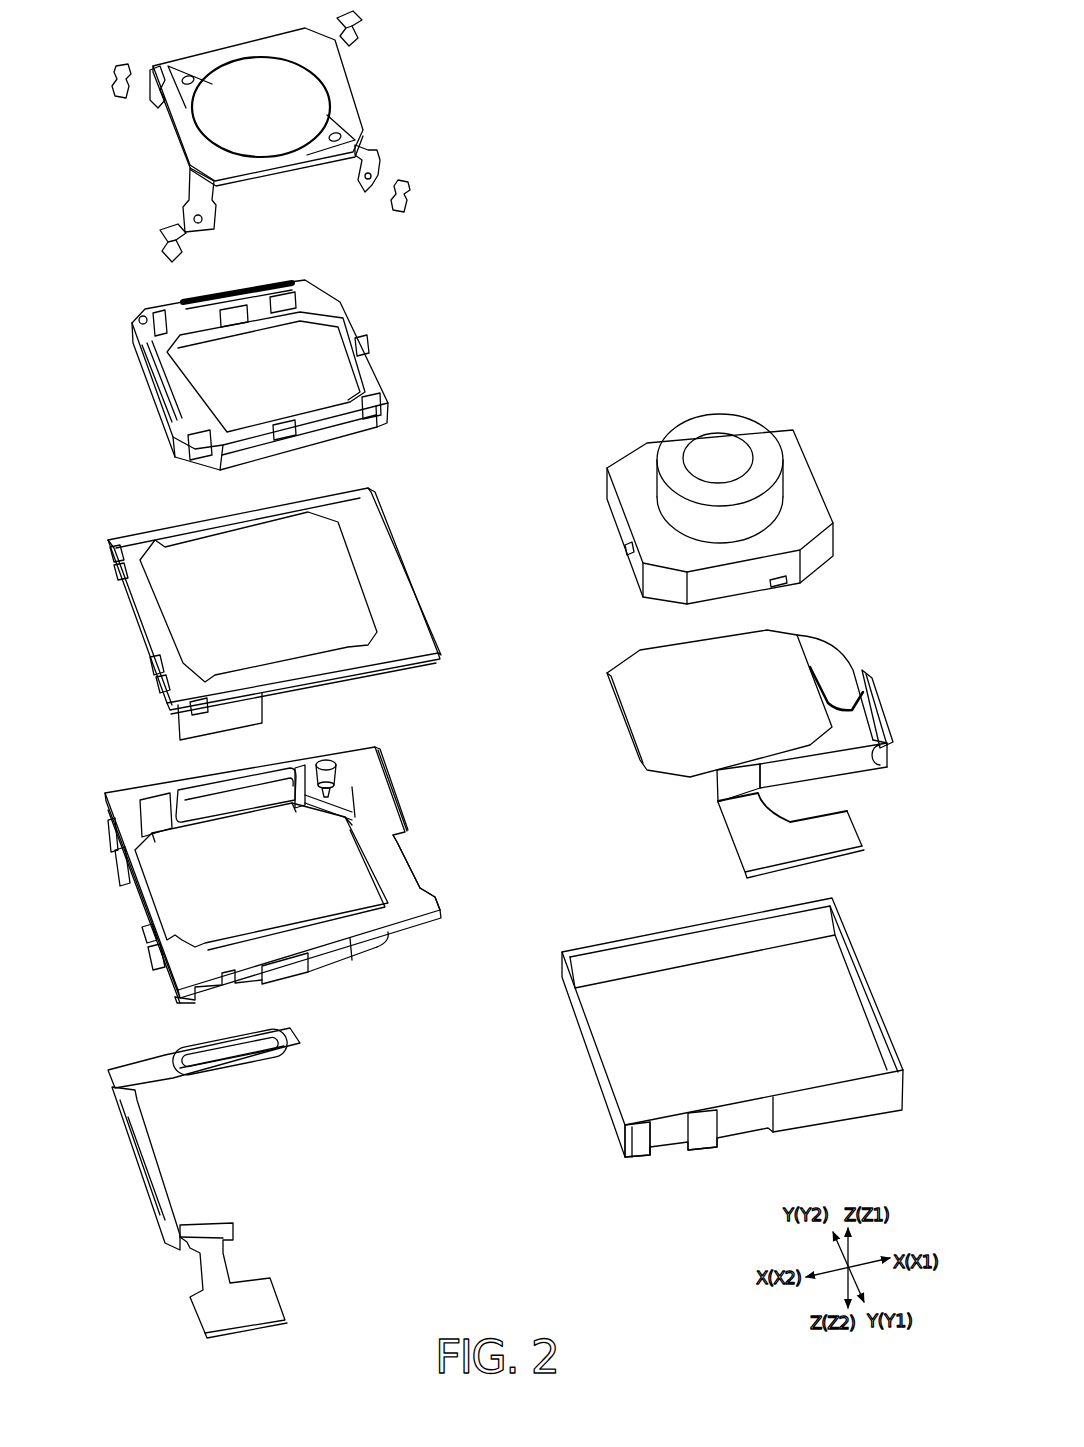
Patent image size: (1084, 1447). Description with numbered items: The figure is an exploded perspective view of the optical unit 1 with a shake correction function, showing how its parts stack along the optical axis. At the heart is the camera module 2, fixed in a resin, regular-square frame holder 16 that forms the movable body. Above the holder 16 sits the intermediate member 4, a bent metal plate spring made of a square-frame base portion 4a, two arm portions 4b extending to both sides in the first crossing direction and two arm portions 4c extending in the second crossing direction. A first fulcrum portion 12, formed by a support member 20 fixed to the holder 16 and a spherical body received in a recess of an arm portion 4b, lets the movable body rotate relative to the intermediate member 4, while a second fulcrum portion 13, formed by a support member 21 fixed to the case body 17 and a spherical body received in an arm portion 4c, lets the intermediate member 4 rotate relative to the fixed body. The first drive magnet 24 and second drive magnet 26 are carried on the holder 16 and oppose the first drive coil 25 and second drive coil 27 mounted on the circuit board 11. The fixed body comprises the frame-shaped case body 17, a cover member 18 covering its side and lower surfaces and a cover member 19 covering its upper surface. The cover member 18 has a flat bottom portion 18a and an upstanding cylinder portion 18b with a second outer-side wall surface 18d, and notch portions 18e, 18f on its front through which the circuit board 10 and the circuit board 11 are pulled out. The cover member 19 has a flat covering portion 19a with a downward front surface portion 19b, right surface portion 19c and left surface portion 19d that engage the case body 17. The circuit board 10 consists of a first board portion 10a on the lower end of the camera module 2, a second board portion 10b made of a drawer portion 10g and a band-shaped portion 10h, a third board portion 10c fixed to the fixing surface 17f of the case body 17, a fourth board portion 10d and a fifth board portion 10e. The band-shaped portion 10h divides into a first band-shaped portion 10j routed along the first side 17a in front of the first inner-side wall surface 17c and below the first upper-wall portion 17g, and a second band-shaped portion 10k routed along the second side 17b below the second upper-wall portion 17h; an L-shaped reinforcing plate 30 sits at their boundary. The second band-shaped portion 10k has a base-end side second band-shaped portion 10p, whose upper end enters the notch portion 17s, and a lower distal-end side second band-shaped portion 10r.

The optical unit 1 is at (731, 58).
The camera module 2 is at (713, 412).
The intermediate member 4 is at (258, 93).
The base portion 4a is at (216, 50).
The arm portion 4b is at (154, 110).
The arm portion 4c is at (188, 193).
The circuit board 10 is at (750, 735).
The first board portion 10a is at (607, 668).
The second board portion 10b is at (840, 666).
The drawer portion 10g is at (837, 648).
The second band-shaped portion 10k is at (900, 689).
The base-end side second band-shaped portion 10p is at (872, 674).
The distal-end side second band-shaped portion 10r is at (880, 720).
The third board portion 10c is at (714, 788).
The fourth board portion 10d is at (718, 822).
The fifth board portion 10e is at (728, 852).
The band-shaped portion 10h is at (895, 819).
The first band-shaped portion 10j is at (860, 778).
The reinforcing plate 30 is at (868, 770).
The circuit board 11 is at (237, 1230).
The first fulcrum portion 12 is at (110, 113).
The second fulcrum portion 13 is at (400, 39).
The holder 16 is at (260, 352).
The case body 17 is at (317, 908).
The first side 17a is at (334, 1012).
The second side 17b is at (442, 840).
The first inner-side wall surface 17c is at (350, 951).
The fixing surface 17f is at (290, 968).
The first upper-wall portion 17g is at (394, 951).
The second upper-wall portion 17h is at (441, 904).
The notch portion 17s is at (421, 886).
The cover member 18 is at (730, 1019).
The bottom portion 18a is at (675, 980).
The cylinder portion 18b is at (601, 948).
The second outer-side wall surface 18d is at (862, 990).
The notch portion 18e is at (719, 1120).
The notch portion 18f is at (651, 1138).
The cover member 19 is at (271, 618).
The covering portion 19a is at (275, 660).
The front surface portion 19b is at (314, 690).
The right surface portion 19c is at (425, 598).
The left surface portion 19d is at (128, 628).
The support member 20 is at (119, 66).
The support member 21 is at (364, 22).
The first drive magnet 24 is at (150, 403).
The first drive coil 25 is at (147, 1147).
The second drive magnet 26 is at (237, 296).
The second drive coil 27 is at (238, 1078).